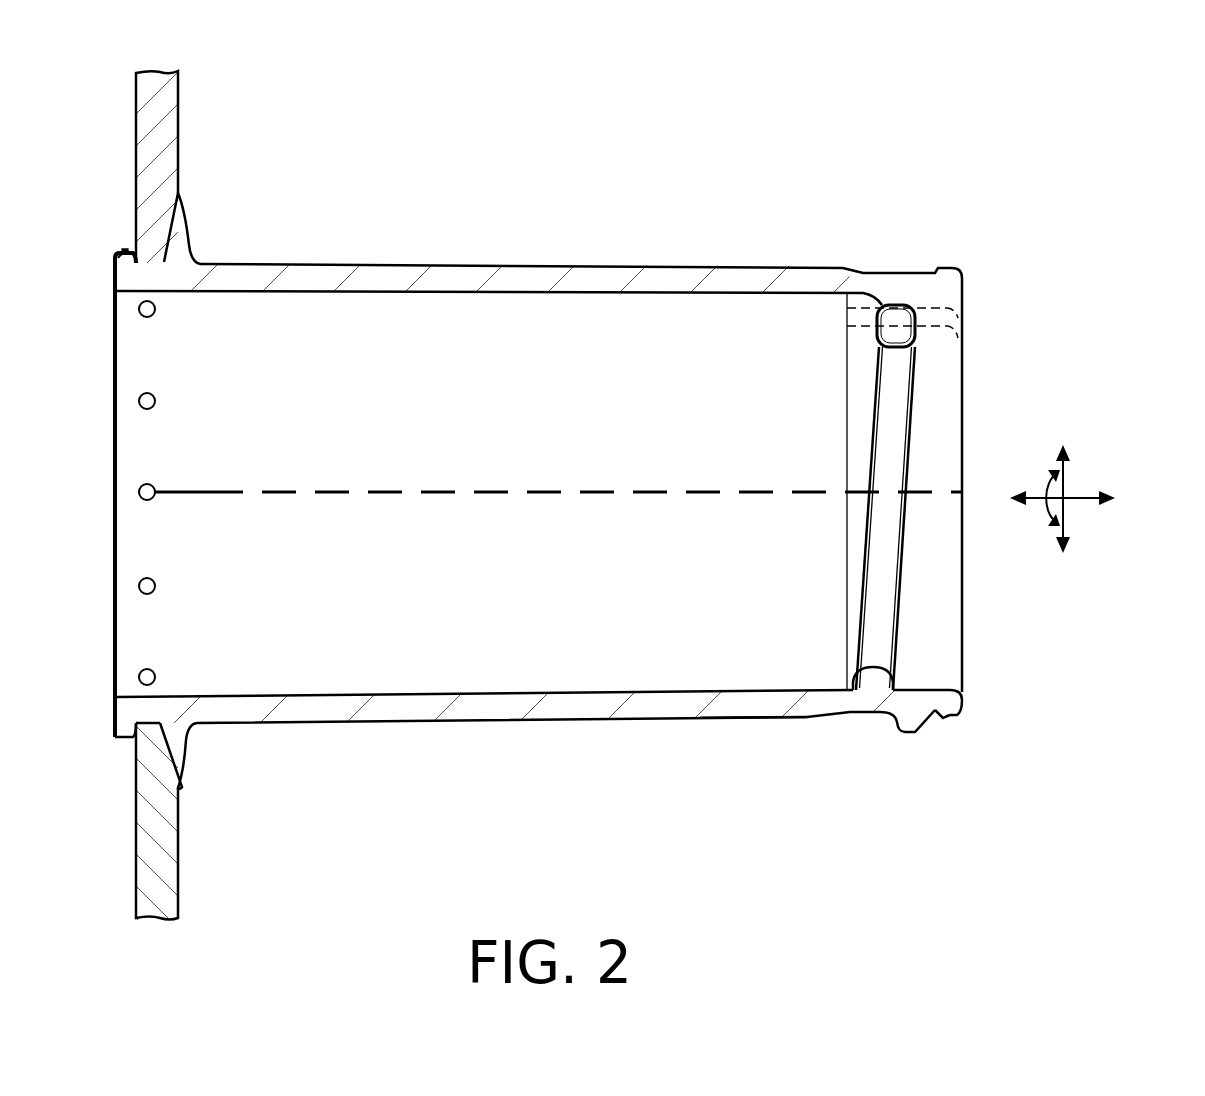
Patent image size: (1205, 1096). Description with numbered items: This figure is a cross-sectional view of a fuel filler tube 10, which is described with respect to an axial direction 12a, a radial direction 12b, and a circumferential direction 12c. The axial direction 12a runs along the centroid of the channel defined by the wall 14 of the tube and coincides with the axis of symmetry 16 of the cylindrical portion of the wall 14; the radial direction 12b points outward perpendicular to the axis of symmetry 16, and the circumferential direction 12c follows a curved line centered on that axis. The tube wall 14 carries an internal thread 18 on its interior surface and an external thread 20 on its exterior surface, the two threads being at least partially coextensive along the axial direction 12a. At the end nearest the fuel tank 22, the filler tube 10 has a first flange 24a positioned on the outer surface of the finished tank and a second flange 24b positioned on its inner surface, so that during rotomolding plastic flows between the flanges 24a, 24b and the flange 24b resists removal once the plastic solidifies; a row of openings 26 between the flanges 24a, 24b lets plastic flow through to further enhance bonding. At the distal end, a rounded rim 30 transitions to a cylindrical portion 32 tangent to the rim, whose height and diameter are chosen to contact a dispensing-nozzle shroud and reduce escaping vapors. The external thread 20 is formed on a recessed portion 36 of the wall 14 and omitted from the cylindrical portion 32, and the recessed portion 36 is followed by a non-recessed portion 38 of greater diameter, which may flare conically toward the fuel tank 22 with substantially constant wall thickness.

The fuel filler tube 10 is at (567, 140).
The axial direction 12a is at (1110, 497).
The radial direction 12b is at (1060, 458).
The circumferential direction 12c is at (1055, 513).
The wall 14 is at (525, 278).
The axis of symmetry 16 is at (513, 492).
The internal thread 18 is at (878, 425).
The external thread 20 is at (912, 723).
The fuel tank 22 is at (163, 838).
The first flange 24a is at (183, 237).
The second flange 24b is at (115, 255).
The openings 26 is at (155, 312).
The rounded rim 30 is at (958, 703).
The cylindrical portion 32 is at (945, 718).
The recessed portion 36 is at (880, 712).
The non-recessed portion 38 is at (812, 717).